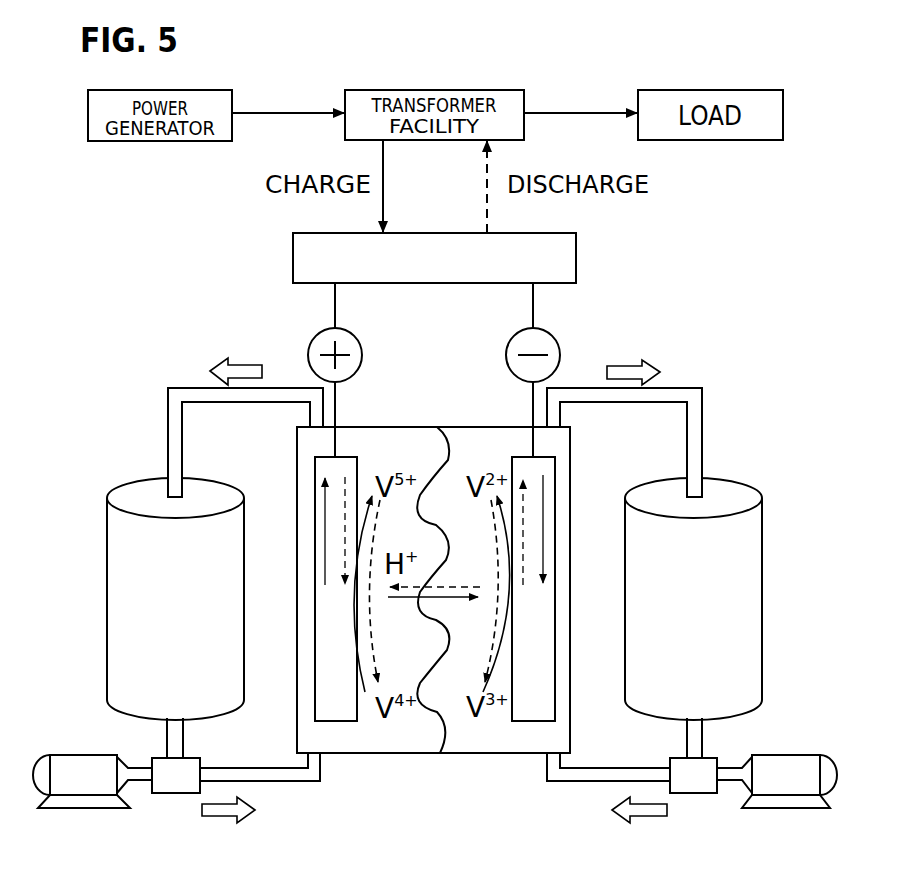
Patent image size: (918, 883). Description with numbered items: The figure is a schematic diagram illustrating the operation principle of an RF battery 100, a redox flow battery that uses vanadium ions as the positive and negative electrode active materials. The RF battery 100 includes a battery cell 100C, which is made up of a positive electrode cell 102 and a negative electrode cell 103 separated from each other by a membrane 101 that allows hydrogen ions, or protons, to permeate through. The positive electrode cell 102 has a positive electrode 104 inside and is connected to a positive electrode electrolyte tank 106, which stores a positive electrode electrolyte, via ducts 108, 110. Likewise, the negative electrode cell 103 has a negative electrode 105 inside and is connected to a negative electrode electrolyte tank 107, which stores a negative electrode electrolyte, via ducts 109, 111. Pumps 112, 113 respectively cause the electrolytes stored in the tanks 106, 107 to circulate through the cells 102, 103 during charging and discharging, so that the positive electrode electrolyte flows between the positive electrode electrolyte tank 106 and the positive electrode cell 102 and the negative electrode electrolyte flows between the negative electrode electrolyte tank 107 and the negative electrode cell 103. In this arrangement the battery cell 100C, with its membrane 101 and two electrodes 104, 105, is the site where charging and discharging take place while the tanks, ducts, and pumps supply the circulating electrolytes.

The RF battery 100 is at (251, 318).
The battery cell 100C is at (395, 423).
The membrane 101 is at (427, 753).
The positive electrode cell 102 is at (365, 753).
The negative electrode cell 103 is at (502, 753).
The positive electrode 104 is at (313, 690).
The negative electrode 105 is at (557, 690).
The positive electrode electrolyte tank 106 is at (130, 487).
The negative electrode electrolyte tank 107 is at (742, 483).
The duct 108 is at (285, 779).
The duct 109 is at (587, 779).
The duct 110 is at (183, 388).
The duct 111 is at (683, 388).
The pump 112 is at (67, 755).
The pump 113 is at (800, 755).